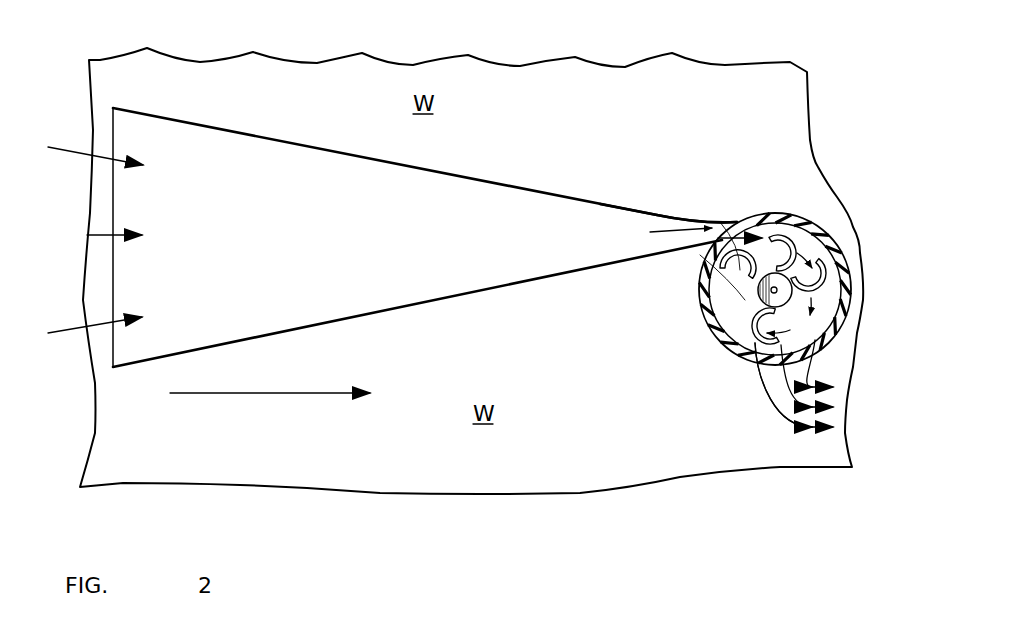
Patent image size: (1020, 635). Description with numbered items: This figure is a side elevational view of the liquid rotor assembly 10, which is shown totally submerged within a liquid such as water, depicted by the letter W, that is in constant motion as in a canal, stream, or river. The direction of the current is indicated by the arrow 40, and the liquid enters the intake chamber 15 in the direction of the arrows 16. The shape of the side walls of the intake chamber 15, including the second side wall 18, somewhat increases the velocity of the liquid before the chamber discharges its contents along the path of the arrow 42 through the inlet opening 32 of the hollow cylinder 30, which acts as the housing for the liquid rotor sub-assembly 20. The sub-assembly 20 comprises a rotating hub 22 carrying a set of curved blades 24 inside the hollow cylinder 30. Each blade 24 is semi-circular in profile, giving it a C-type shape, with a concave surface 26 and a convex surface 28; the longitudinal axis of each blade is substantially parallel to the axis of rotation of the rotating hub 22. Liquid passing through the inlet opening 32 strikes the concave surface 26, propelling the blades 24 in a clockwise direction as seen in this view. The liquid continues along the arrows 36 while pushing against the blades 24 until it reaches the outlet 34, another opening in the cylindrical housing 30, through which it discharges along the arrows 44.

The liquid rotor assembly 10 is at (340, 108).
The intake chamber 15 is at (498, 181).
The arrows 16 is at (77, 147).
The second side wall 18 is at (255, 239).
The sub-assembly 20 is at (749, 286).
The rotating hub 22 is at (758, 288).
The blades 24 is at (788, 246).
The concave surface 26 is at (772, 236).
The convex surface 28 is at (793, 250).
The hollow cylinder 30 is at (723, 352).
The inlet opening 32 is at (668, 225).
The outlet 34 is at (748, 377).
The arrows 36 is at (820, 293).
The arrow 40 is at (267, 395).
The arrow 42 is at (705, 238).
The arrows 44 is at (787, 423).